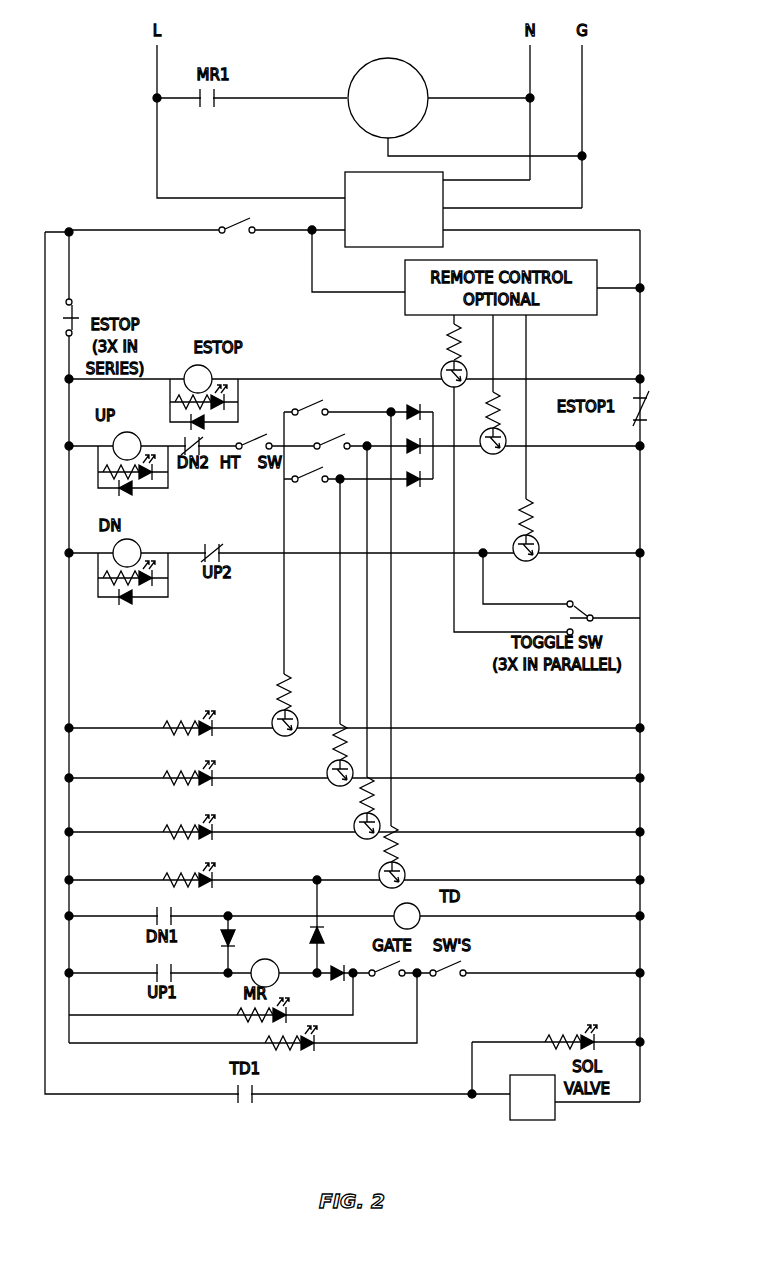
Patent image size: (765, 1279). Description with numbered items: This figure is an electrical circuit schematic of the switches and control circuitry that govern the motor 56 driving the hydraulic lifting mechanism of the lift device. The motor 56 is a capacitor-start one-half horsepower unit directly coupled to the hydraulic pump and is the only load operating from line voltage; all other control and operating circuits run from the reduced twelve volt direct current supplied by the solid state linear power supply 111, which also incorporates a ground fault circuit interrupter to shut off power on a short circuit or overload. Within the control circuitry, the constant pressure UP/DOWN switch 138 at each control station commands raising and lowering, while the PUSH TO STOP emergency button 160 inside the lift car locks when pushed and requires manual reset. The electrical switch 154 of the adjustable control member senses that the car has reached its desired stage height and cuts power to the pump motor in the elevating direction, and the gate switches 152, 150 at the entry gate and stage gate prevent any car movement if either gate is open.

The motor 56 is at (388, 58).
The power supply 111 is at (350, 172).
The emergency stop button 160 is at (78, 306).
The electrical switch 154 is at (250, 440).
The UP/DOWN switch 138 is at (587, 598).
The electrical switch 152 is at (401, 962).
The electrical switch 150 is at (449, 968).